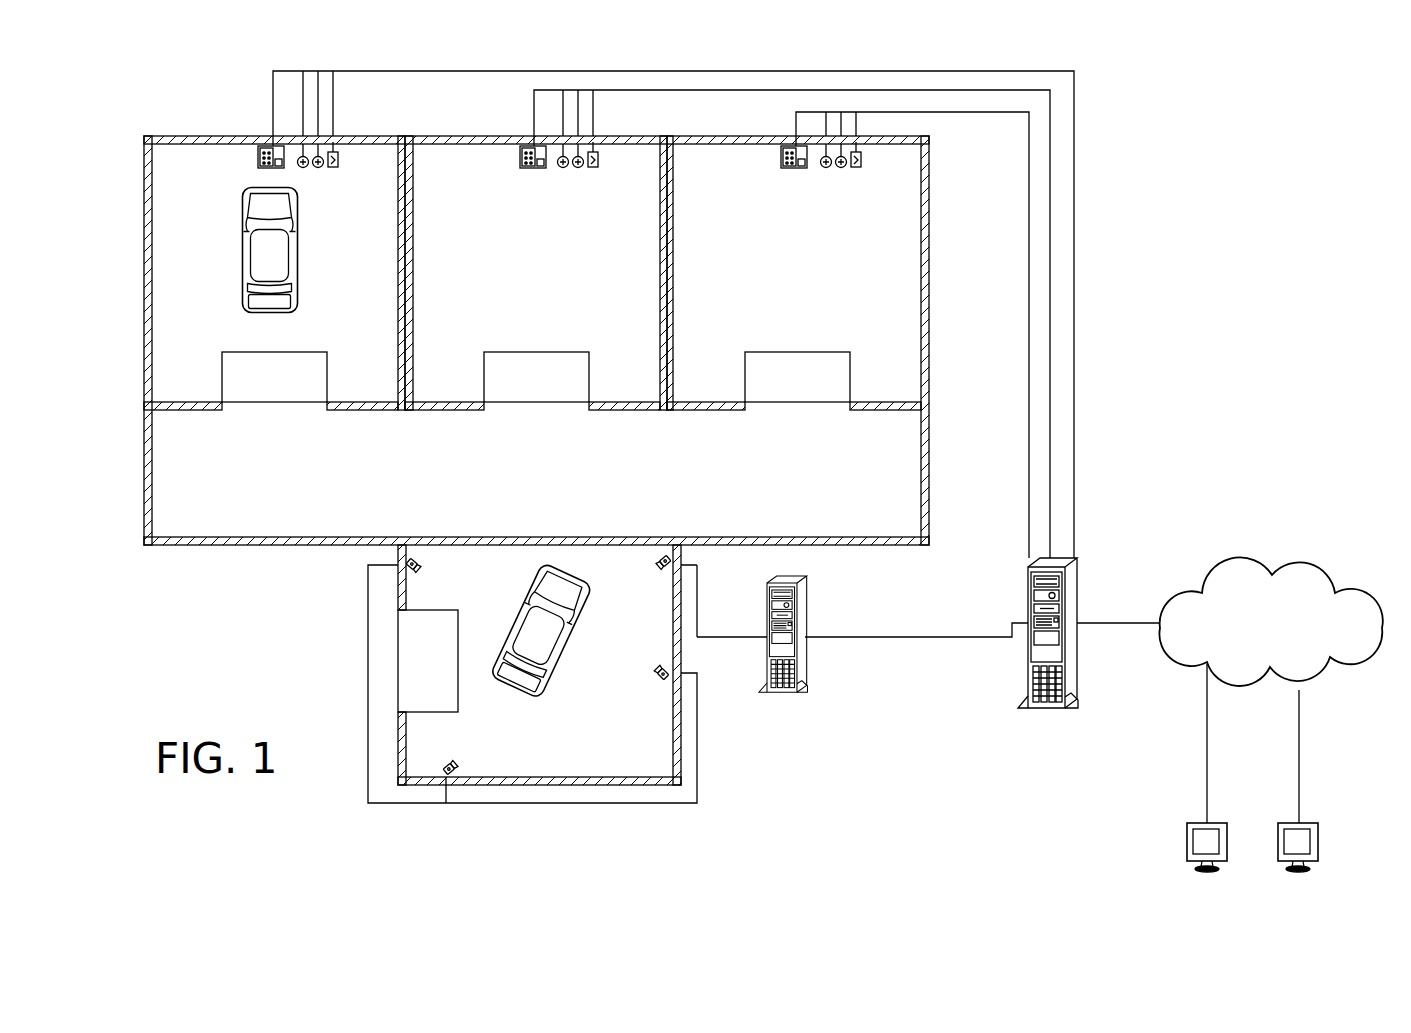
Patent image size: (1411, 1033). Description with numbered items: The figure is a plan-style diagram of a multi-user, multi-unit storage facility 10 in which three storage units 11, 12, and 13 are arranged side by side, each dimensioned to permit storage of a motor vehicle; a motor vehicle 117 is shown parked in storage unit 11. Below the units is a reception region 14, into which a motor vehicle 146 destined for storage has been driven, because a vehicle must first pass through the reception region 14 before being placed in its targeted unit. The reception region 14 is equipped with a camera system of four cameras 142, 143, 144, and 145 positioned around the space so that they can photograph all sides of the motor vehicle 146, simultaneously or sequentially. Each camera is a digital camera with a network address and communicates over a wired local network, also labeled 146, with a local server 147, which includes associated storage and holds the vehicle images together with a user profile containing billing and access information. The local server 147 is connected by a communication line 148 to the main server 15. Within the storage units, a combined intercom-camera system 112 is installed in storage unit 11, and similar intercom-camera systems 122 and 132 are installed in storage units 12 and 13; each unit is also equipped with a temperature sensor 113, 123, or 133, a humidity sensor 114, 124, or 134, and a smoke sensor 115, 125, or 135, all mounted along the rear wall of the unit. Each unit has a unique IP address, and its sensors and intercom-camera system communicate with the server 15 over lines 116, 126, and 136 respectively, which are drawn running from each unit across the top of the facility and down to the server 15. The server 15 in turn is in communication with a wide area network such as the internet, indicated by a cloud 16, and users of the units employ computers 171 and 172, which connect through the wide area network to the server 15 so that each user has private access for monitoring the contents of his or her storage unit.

The multi-user, multi-unit storage facility 10 is at (143, 214).
The storage unit 11 is at (205, 325).
The storage unit 12 is at (465, 325).
The storage unit 13 is at (728, 325).
The reception region 14 is at (601, 765).
The server 15 is at (1079, 667).
The cloud 16 is at (1285, 633).
The combined intercom-camera system 112 is at (258, 152).
The temperature sensor 113 is at (305, 168).
The humidity sensor 114 is at (320, 168).
The smoke sensor 115 is at (341, 158).
The line 116 is at (350, 68).
The motor vehicle 117 is at (298, 258).
The intercom-camera system 122 is at (524, 168).
The temperature sensor 123 is at (560, 168).
The humidity sensor 124 is at (579, 170).
The smoke sensor 125 is at (602, 164).
The line 126 is at (533, 110).
The intercom-camera system 132 is at (784, 167).
The temperature sensor 133 is at (822, 168).
The humidity sensor 134 is at (841, 170).
The smoke sensor 135 is at (863, 164).
The line 136 is at (795, 118).
The camera 142 is at (420, 565).
The camera 143 is at (458, 766).
The camera 144 is at (658, 672).
The camera 145 is at (657, 562).
The motor vehicle / local network 146 is at (585, 583).
The local server 147 is at (810, 685).
The communication line 148 is at (920, 639).
The computer 171 is at (1187, 840).
The computer 172 is at (1320, 840).